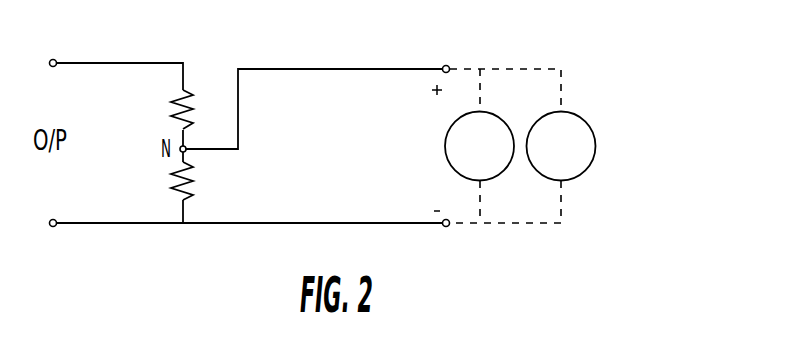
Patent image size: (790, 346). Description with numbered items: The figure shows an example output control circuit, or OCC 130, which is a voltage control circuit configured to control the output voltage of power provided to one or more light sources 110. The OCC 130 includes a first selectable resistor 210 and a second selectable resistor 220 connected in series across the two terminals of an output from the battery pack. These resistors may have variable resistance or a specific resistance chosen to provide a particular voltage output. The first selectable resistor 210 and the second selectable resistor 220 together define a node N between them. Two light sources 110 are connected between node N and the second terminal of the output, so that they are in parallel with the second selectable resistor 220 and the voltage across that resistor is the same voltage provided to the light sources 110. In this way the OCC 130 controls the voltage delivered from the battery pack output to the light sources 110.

The light source 110 is at (495, 160).
The output control circuit (OCC) 130 is at (589, 125).
The first selectable resistor 210 is at (166, 111).
The second selectable resistor 220 is at (167, 179).